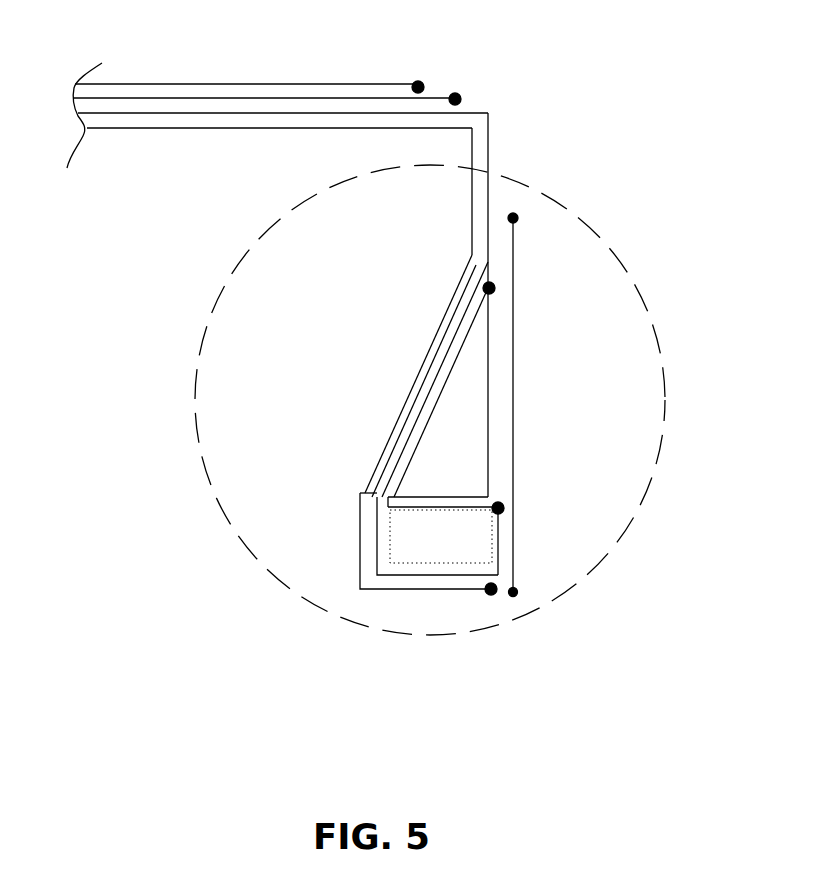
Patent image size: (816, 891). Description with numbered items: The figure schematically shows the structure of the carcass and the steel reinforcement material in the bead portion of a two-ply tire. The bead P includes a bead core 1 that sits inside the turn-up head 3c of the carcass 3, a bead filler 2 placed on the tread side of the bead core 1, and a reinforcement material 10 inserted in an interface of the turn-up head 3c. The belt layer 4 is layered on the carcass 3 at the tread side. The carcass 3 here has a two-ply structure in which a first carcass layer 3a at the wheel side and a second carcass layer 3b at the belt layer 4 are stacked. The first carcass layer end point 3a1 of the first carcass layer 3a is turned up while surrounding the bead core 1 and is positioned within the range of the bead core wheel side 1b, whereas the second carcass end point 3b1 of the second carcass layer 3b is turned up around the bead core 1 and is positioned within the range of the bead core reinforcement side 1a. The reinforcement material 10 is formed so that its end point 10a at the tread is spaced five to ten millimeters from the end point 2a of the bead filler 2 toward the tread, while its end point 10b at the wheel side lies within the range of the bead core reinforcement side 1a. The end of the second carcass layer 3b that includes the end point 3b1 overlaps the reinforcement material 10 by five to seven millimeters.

The bead core 1 is at (418, 542).
The bead core reinforcement side 1a is at (493, 535).
The bead core wheel side 1b is at (442, 563).
The bead filler 2 is at (458, 410).
The end point of bead filler 2a is at (488, 290).
The carcass 3 is at (371, 368).
The first carcass layer 3a is at (268, 128).
The second carcass layer 3b is at (397, 114).
The first carcass layer end point 3a1 is at (494, 590).
The second carcass layer end point 3b1 is at (500, 505).
The turn-up head 3c is at (533, 540).
The belt layer 4 is at (288, 98).
The reinforcement material 10 is at (513, 344).
The end point of reinforcement material at tread 10a is at (513, 217).
The end point of reinforcement material at wheel side 10b is at (515, 592).
The bead P is at (197, 446).